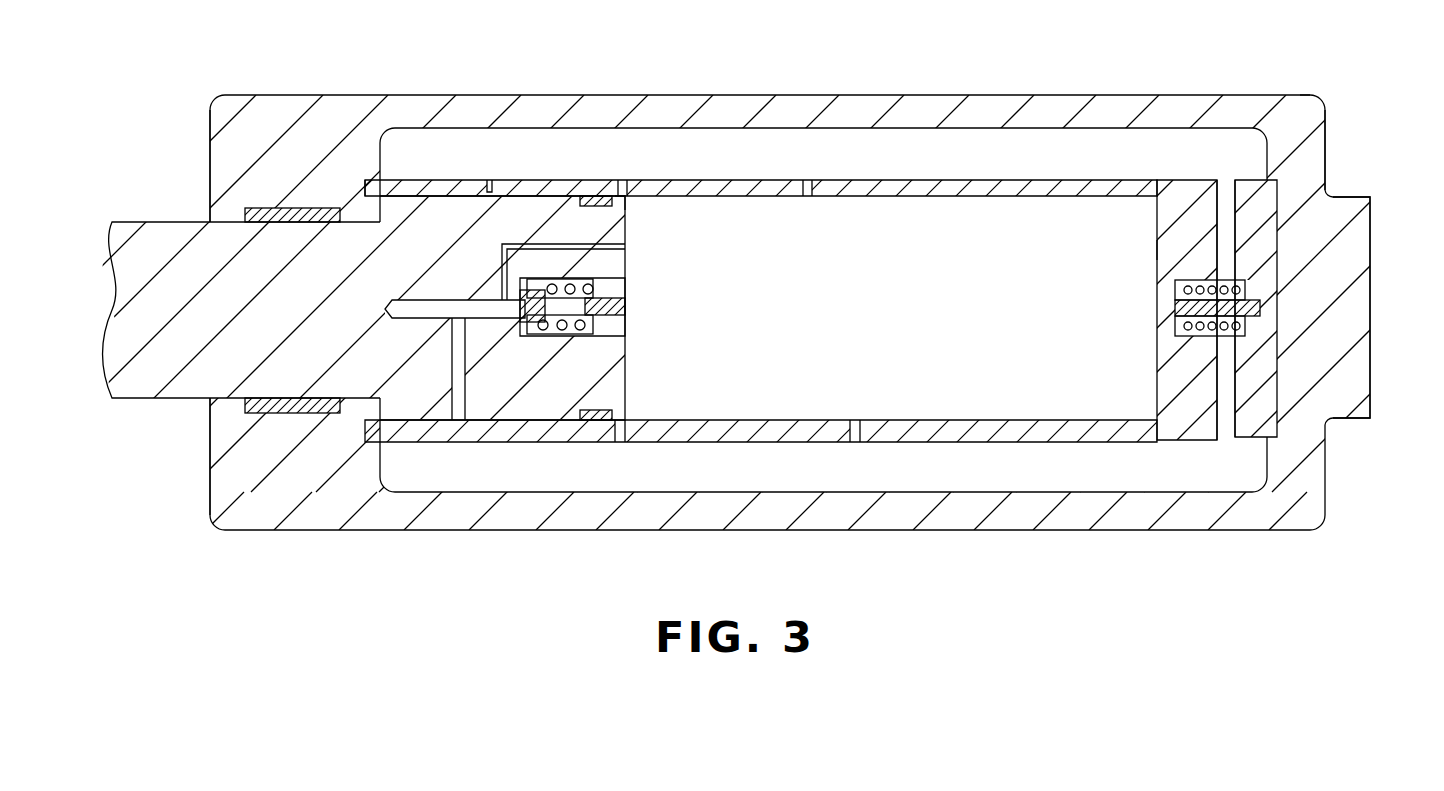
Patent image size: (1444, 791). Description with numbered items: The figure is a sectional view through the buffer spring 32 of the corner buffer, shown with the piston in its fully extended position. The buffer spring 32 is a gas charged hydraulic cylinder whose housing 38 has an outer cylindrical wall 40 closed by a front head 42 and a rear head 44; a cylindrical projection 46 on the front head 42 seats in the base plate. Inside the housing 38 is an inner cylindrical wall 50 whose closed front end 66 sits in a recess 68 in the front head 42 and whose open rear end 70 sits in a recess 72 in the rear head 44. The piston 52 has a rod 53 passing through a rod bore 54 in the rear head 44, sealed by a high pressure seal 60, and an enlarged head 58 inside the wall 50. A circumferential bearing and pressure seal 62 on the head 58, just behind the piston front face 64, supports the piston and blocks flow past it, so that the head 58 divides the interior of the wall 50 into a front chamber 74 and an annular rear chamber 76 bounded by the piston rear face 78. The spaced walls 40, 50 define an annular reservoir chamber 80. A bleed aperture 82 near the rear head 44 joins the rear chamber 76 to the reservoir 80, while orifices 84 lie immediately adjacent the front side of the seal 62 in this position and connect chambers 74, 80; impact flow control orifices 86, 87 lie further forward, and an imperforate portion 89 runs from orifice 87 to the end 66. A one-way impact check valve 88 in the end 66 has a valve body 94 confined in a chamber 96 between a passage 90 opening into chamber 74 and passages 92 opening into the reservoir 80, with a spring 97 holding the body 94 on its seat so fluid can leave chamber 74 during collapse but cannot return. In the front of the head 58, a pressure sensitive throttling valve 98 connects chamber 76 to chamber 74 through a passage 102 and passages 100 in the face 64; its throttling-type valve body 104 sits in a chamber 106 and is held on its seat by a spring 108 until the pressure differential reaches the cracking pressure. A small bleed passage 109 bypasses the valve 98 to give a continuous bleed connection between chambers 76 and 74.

The buffer spring 32 is at (192, 550).
The cylindrical body or housing 38 is at (1300, 97).
The outer cylindrical wall 40 is at (795, 100).
The front head 42 is at (1322, 165).
The rear head 44 is at (210, 155).
The cylindrical projection 46 is at (1345, 418).
The cylindrical wall 50 is at (940, 180).
The piston 52 is at (188, 400).
The rod 53 is at (150, 222).
The rod bore or passage 54 is at (200, 222).
The enlarged head 58 is at (525, 215).
The high pressure seal 60 is at (290, 208).
The circumferential bearing and pressure seal 62 is at (597, 196).
The piston front face 64 is at (627, 205).
The closed front end 66 is at (1185, 190).
The recess 68 is at (1277, 235).
The open rear end 70 is at (372, 180).
The recess 72 is at (340, 186).
The front chamber 74 is at (887, 314).
The annular rear chamber 76 is at (345, 405).
The annular piston rear face 78 is at (380, 445).
The annular reservoir chamber 80 is at (712, 150).
The bleed aperture 82 is at (488, 180).
The orifices 84 is at (623, 180).
The impact flow control orifice 86 is at (810, 197).
The impact flow control orifice 87 is at (856, 420).
The one-way impact check valve 88 is at (1175, 288).
The imperforate portion 89 is at (985, 420).
The passage 90 is at (1175, 326).
The passages 92 is at (1226, 182).
The valve body 94 is at (1262, 308).
The chamber 96 is at (1217, 338).
The spring 97 is at (1165, 258).
The pressure sensitive throttling valve 98 is at (535, 338).
The passages 100 is at (630, 318).
The passage 102 is at (458, 420).
The throttling-type valve body 104 is at (600, 336).
The chamber 106 is at (568, 336).
The spring 108 is at (598, 286).
The bleed passage 109 is at (565, 233).